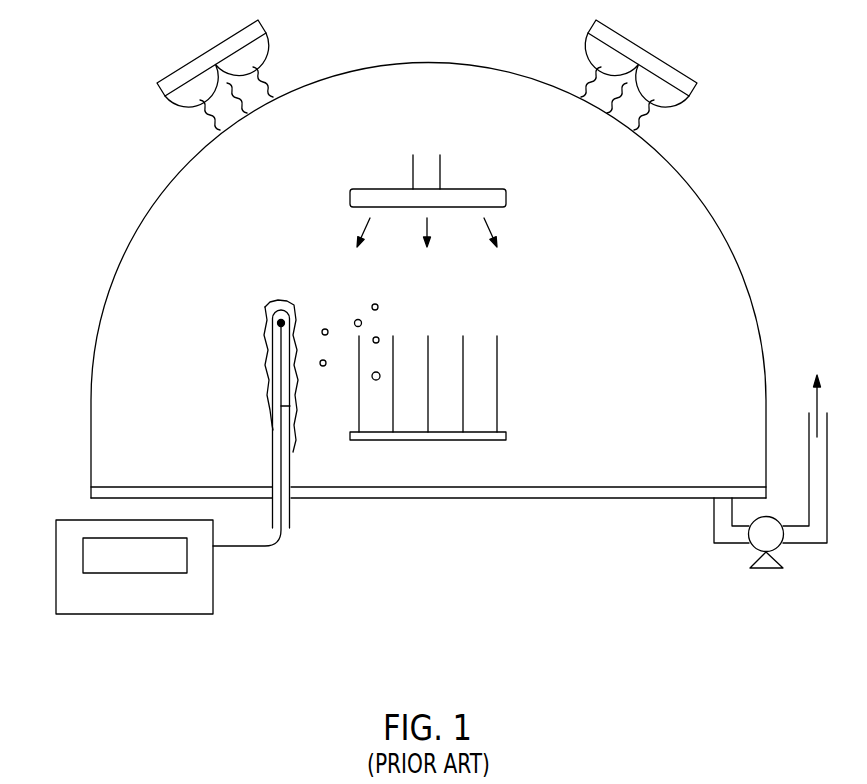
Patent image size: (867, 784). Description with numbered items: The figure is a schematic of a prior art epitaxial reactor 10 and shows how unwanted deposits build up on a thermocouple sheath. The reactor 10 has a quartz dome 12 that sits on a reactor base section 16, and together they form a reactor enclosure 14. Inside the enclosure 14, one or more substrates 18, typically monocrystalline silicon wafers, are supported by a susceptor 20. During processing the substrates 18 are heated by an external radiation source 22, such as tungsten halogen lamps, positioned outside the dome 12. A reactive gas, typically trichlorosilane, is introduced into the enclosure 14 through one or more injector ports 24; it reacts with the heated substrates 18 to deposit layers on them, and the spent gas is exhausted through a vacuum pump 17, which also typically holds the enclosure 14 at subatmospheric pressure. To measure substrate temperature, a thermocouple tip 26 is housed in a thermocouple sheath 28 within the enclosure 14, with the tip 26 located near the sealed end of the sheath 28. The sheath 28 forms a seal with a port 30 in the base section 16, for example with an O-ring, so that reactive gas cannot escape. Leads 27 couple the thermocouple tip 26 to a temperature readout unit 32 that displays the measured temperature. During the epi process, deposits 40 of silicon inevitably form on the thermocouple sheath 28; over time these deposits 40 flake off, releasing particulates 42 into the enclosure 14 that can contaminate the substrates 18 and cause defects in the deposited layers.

The reactor 10 is at (82, 183).
The quartz dome 12 is at (707, 209).
The reactor enclosure 14 is at (604, 266).
The reactor base section 16 is at (605, 488).
The vacuum pump 17 is at (770, 568).
The substrates 18 is at (499, 356).
The susceptor 20 is at (507, 436).
The external radiation source 22 is at (197, 63).
The injector ports 24 is at (472, 195).
The thermocouple tip 26 is at (285, 322).
The leads 27 is at (291, 407).
The thermocouple sheath 28 is at (292, 478).
The port 30 is at (291, 499).
The temperature readout unit 32 is at (176, 615).
The deposits 40 is at (266, 378).
The particulates 42 is at (378, 306).